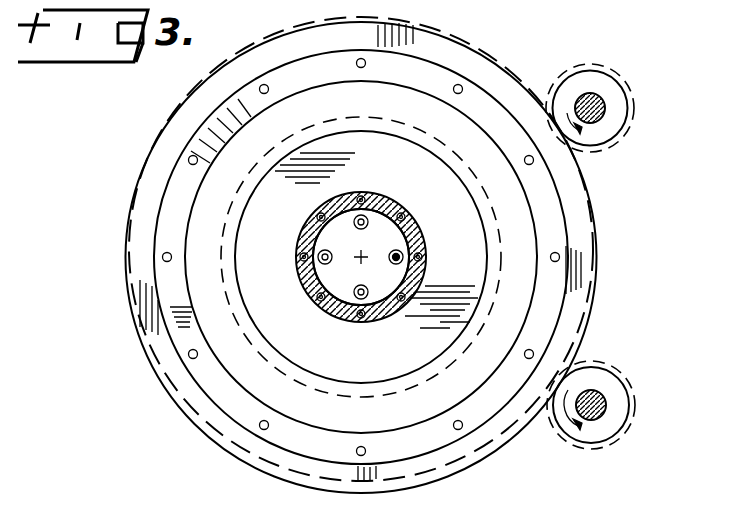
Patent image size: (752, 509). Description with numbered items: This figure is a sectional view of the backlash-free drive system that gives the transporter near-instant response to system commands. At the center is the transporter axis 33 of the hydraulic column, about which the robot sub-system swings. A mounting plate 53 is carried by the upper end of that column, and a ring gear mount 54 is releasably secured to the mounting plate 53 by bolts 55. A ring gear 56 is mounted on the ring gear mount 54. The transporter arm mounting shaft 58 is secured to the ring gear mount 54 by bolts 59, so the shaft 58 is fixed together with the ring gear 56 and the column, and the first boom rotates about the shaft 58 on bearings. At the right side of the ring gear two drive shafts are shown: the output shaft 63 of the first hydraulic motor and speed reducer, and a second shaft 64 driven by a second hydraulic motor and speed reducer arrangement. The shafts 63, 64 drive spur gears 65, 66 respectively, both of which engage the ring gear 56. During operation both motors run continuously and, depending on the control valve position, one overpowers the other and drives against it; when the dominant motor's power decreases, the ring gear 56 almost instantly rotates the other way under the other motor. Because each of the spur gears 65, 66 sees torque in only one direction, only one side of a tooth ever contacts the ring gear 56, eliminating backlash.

The transporter axis 33 is at (368, 233).
The mounting plate 53 is at (358, 394).
The ring gear mount 54 is at (168, 212).
The bolts 55 is at (360, 279).
The ring gear 56 is at (598, 287).
The transporter arm mounting shaft 58 is at (384, 310).
The bolts 59 is at (312, 292).
The output shaft 63 is at (600, 400).
The second shaft 64 is at (597, 92).
The spur gear 65 is at (627, 436).
The spur gear 66 is at (635, 120).